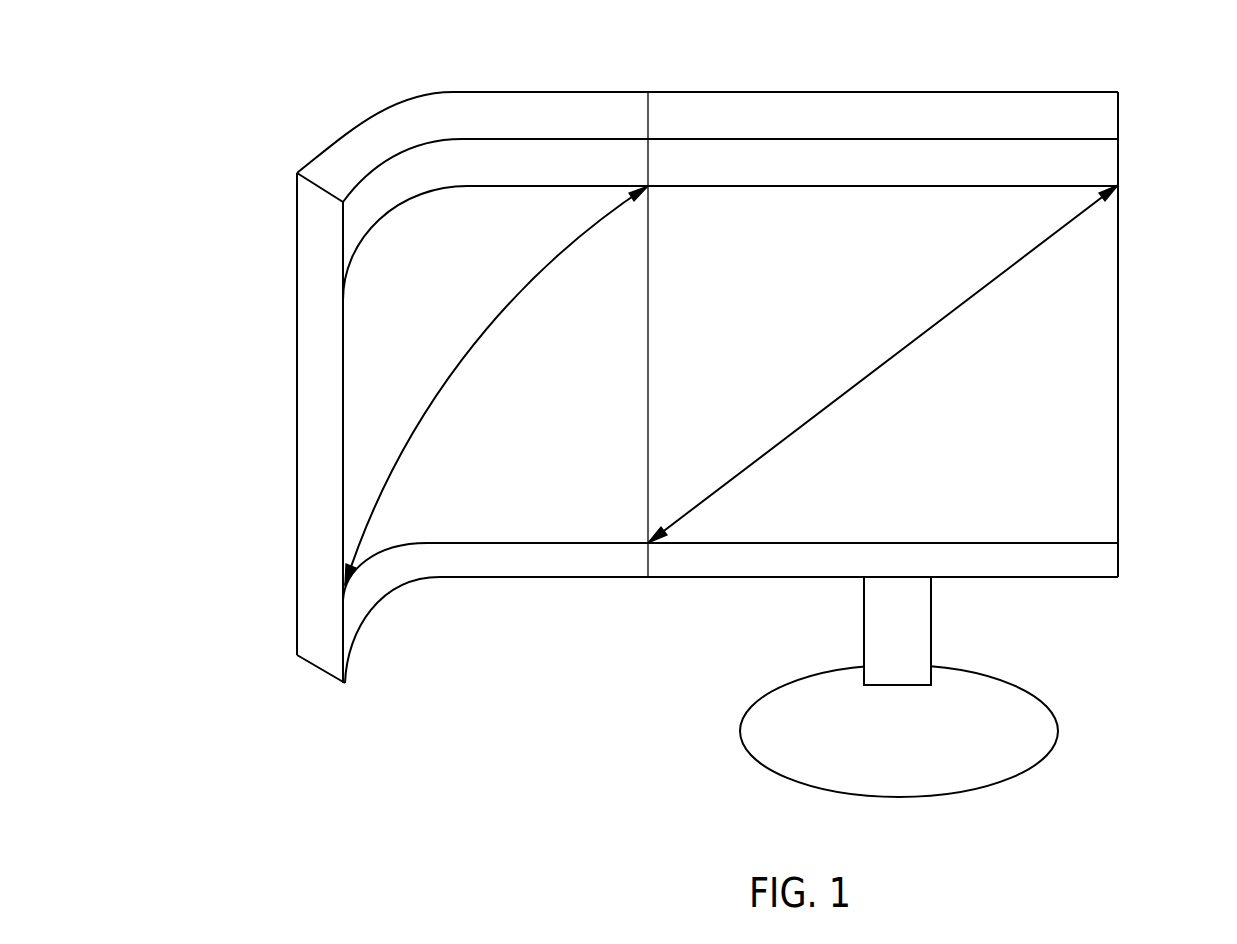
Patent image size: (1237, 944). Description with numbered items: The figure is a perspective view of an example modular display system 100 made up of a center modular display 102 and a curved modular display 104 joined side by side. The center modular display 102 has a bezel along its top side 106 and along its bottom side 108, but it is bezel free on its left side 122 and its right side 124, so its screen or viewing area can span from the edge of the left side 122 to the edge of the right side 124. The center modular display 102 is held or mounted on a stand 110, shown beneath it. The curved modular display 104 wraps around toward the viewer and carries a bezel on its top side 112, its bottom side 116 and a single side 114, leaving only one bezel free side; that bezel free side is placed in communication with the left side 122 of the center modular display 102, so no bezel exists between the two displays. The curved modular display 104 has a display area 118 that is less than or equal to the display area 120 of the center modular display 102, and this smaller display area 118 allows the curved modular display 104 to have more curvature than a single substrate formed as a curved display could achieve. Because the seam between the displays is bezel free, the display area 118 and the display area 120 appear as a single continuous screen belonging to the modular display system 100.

The modular display system 100 is at (131, 42).
The center modular display 102 is at (921, 92).
The curved modular display 104 is at (600, 92).
The top side 106 is at (809, 152).
The bottom side 108 is at (1085, 560).
The stand 110 is at (931, 627).
The top side 112 is at (529, 152).
The single side 114 is at (308, 333).
The bottom side 116 is at (562, 557).
The display area 118 is at (463, 360).
The display area 120 is at (895, 352).
The left side 122 is at (650, 288).
The right side 124 is at (1118, 332).